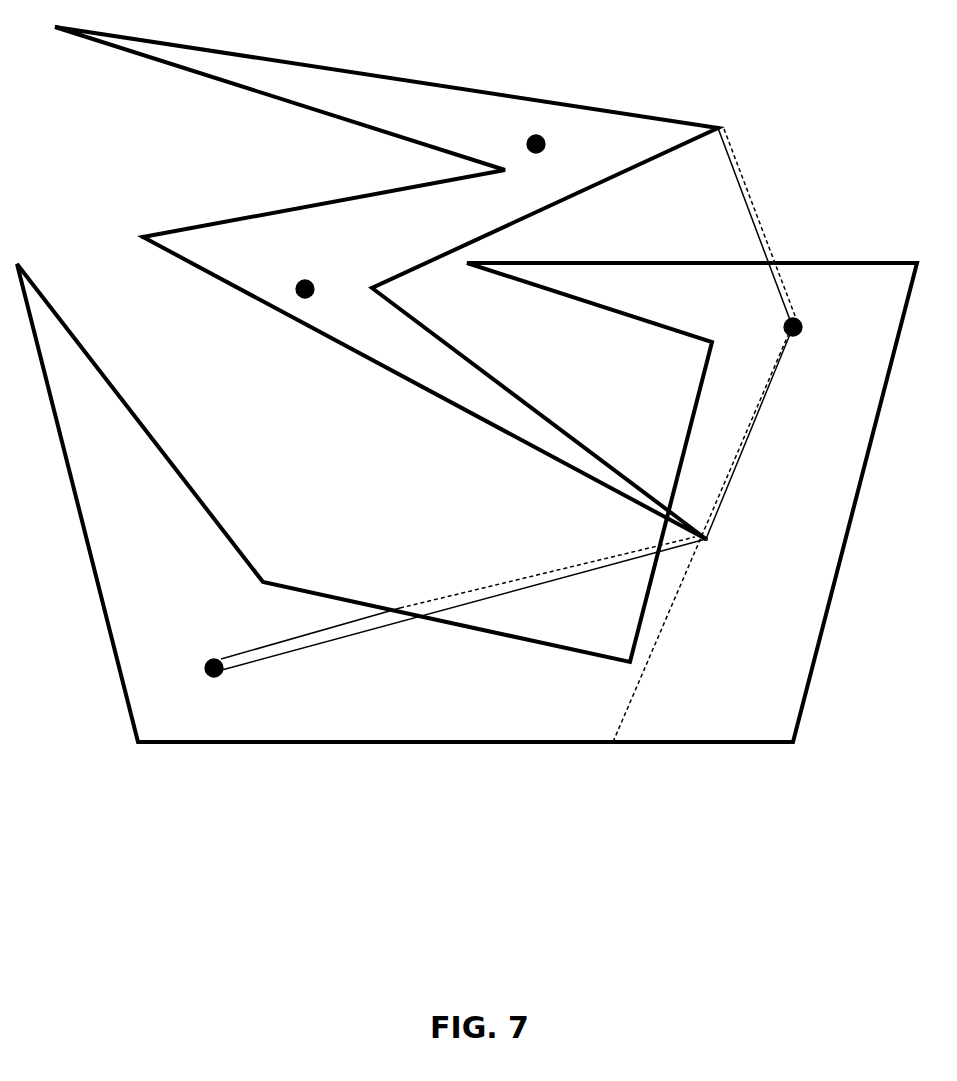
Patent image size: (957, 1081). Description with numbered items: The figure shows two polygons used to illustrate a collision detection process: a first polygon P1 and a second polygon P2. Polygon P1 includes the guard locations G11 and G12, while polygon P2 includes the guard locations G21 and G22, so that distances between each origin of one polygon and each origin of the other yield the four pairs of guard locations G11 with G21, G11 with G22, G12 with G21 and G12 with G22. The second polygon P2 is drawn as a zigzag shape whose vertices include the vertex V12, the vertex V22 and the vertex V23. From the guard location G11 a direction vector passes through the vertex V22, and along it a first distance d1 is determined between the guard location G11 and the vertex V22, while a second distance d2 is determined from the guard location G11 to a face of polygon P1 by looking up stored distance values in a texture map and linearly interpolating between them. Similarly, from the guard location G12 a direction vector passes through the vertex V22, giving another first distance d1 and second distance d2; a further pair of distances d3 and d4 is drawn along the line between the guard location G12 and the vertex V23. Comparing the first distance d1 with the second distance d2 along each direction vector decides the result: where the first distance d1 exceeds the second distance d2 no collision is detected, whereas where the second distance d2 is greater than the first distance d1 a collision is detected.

The first polygon P1 is at (467, 502).
The second polygon P2 is at (386, 283).
The vertex of polygon V12 is at (129, 232).
The vertex of polygon P2 V22 is at (725, 552).
The vertex of polygon P2 V23 is at (726, 124).
The guard location G11 is at (207, 682).
The guard location G12 is at (776, 331).
The guard location G21 is at (313, 273).
The guard location G22 is at (516, 136).
The first distance d1 is at (505, 537).
The second distance d2 is at (507, 493).
The distance d3 is at (763, 225).
The distance d4 is at (754, 224).